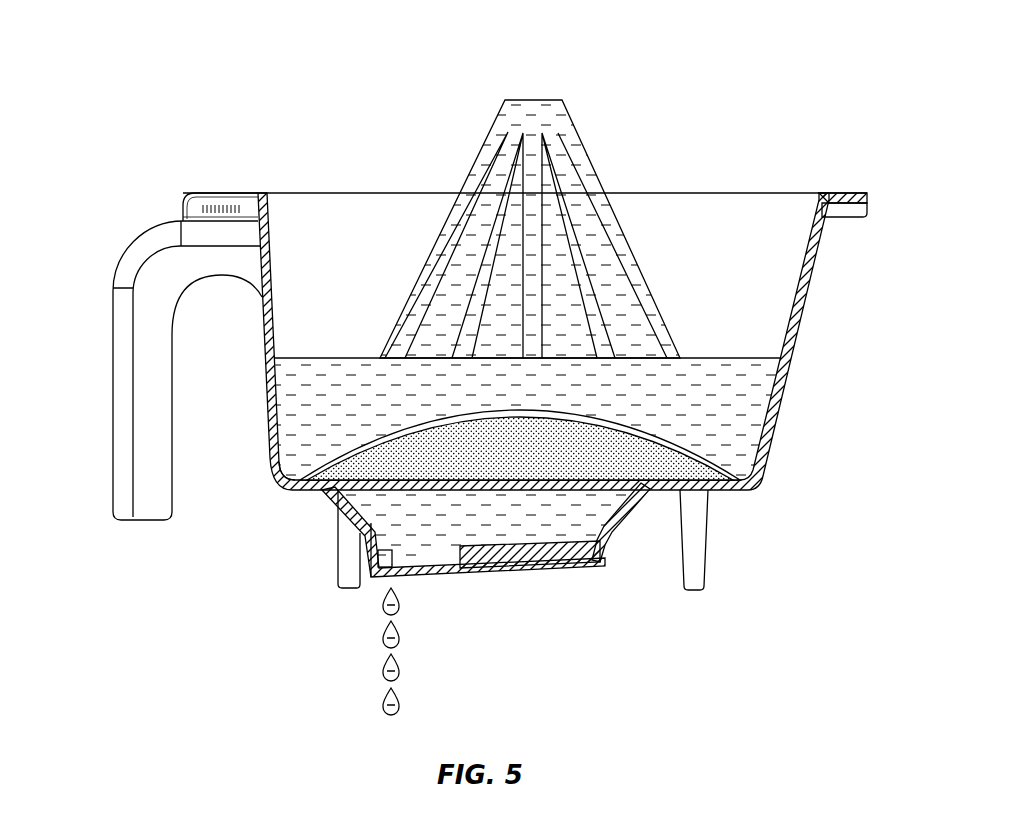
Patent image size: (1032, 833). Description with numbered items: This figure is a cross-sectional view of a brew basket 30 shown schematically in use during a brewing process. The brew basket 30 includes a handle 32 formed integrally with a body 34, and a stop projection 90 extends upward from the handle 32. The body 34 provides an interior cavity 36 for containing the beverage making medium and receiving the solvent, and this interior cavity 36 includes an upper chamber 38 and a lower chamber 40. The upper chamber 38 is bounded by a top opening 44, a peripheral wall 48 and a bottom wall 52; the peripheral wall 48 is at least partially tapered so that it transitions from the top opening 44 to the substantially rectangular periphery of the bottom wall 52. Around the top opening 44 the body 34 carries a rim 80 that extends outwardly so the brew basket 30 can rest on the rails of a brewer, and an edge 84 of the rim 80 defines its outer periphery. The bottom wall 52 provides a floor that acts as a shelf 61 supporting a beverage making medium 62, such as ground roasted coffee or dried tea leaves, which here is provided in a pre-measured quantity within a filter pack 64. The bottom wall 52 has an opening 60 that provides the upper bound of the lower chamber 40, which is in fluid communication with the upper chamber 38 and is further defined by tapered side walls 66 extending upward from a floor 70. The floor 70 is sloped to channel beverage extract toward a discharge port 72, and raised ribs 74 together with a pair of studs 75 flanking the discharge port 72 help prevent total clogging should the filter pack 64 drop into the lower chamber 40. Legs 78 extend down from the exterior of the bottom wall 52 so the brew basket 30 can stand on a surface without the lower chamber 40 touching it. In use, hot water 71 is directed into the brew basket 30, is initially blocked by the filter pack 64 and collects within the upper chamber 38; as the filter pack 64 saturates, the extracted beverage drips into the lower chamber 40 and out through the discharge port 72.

The brew basket 30 is at (750, 68).
The handle 32 is at (123, 395).
The body 34 is at (546, 321).
The interior cavity 36 is at (370, 232).
The upper chamber 38 is at (570, 520).
The lower chamber 40 is at (553, 462).
The top opening 44 is at (815, 192).
The peripheral wall 48 is at (524, 366).
The bottom wall 52 is at (728, 497).
The opening 60 is at (426, 578).
The shelf 61 is at (290, 488).
The beverage making medium 62 is at (437, 566).
The filter pack 64 is at (388, 655).
The tapered side walls 66 is at (633, 507).
The floor 70 is at (460, 578).
The hot water 71 is at (585, 168).
The discharge port 72 is at (387, 582).
The raised ribs 74 is at (512, 567).
The studs 75 is at (368, 573).
The legs 78 is at (345, 553).
The rim 80 is at (838, 192).
The edge 84 is at (870, 199).
The stop projection 90 is at (205, 207).